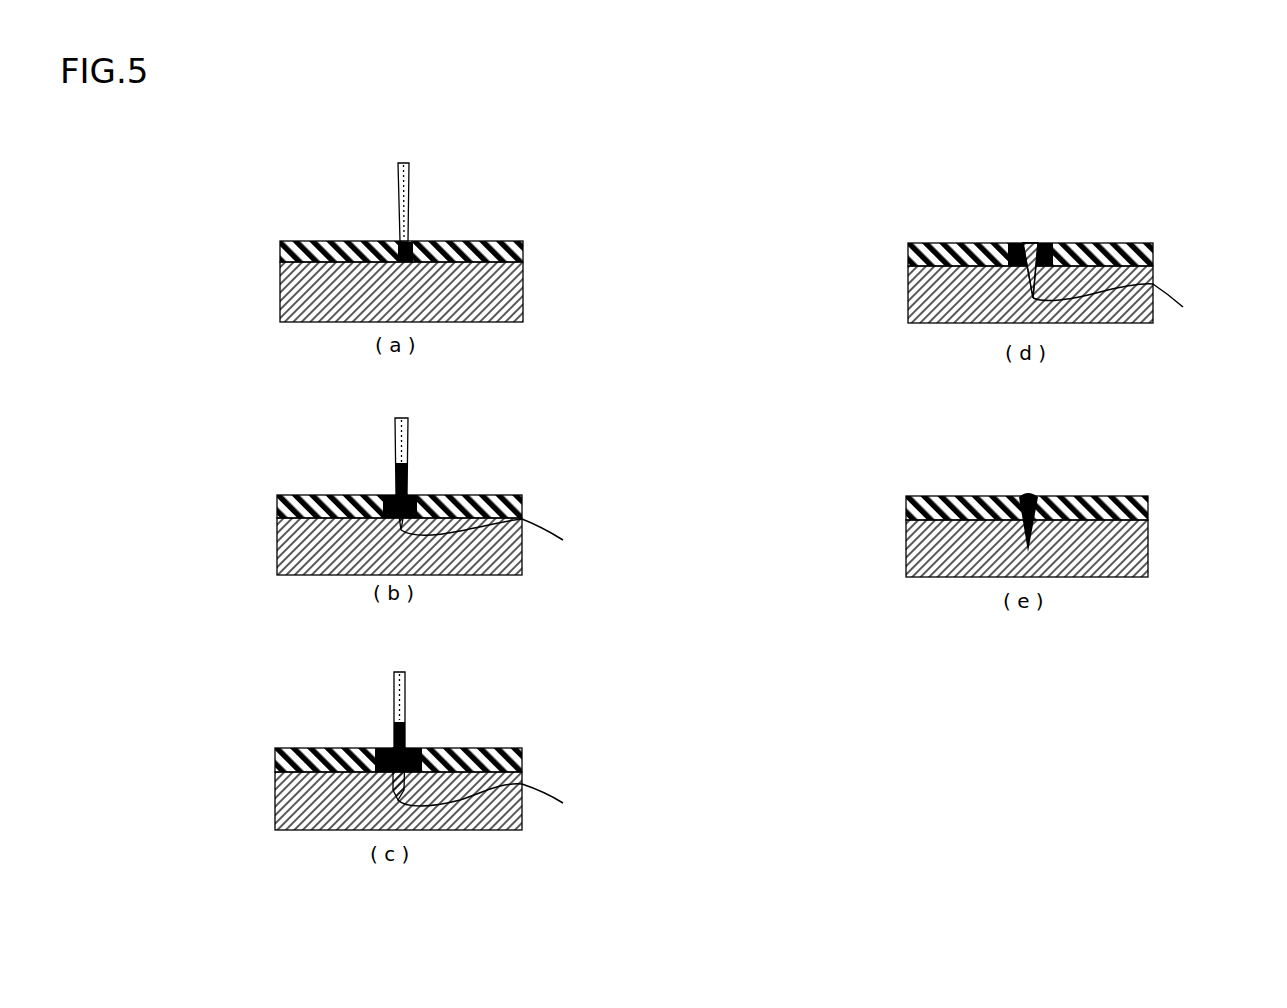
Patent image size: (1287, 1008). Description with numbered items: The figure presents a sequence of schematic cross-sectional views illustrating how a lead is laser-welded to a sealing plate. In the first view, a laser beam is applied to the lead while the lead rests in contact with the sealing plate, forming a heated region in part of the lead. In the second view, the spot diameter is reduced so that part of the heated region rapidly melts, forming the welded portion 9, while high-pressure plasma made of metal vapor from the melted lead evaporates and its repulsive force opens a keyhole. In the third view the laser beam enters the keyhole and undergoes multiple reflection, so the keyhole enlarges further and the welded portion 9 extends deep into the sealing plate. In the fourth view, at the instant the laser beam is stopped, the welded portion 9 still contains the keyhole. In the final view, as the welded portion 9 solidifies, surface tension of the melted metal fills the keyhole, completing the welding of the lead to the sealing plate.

The welded portion 9 is at (1037, 495).